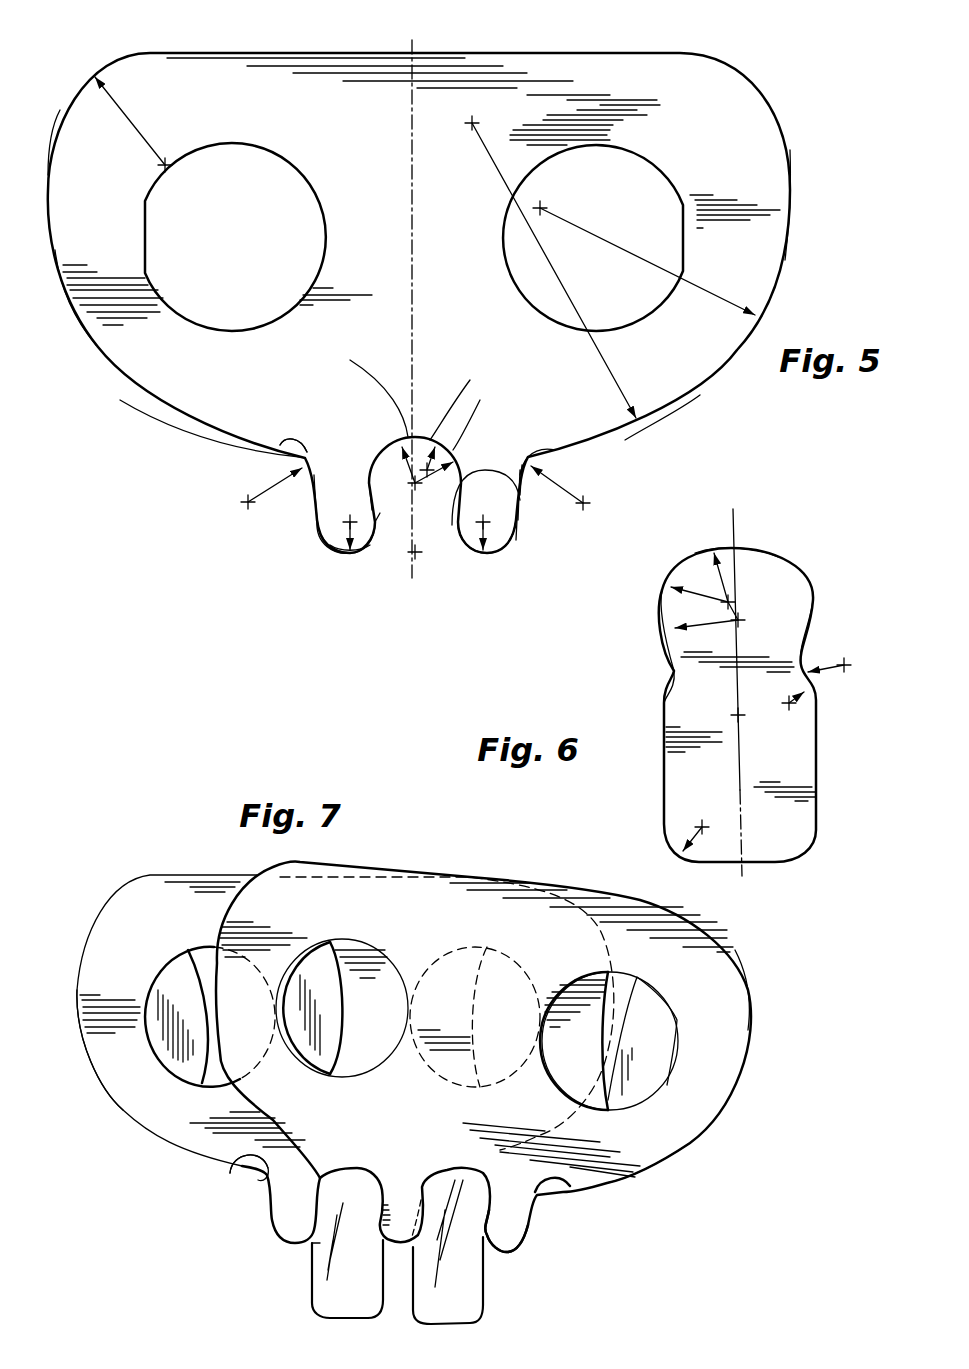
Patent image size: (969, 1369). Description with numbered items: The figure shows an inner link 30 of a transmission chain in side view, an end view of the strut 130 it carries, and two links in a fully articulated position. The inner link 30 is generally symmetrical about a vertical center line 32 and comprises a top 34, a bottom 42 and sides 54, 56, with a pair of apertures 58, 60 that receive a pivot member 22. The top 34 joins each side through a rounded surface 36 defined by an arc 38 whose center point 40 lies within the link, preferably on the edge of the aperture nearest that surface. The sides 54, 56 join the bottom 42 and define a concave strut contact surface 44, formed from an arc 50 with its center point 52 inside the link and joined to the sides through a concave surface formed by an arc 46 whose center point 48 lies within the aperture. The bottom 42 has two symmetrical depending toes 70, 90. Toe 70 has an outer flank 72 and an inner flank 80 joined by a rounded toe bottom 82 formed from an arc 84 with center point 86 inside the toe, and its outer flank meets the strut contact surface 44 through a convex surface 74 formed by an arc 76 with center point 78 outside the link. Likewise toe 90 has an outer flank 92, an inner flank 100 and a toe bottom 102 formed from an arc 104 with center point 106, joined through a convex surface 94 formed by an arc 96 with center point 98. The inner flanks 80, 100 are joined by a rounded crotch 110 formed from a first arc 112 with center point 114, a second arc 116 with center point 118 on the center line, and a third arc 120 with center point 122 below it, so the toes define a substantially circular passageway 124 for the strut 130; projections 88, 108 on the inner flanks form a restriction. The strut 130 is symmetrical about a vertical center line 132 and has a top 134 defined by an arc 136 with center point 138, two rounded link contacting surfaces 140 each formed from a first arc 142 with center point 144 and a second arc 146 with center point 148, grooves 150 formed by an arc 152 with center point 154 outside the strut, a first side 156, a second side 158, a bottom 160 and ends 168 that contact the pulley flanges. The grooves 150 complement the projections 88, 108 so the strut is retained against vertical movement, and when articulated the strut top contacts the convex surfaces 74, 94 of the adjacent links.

In FIG. 7, the pivot member 22 is at (411, 1024).
In FIG. 5, the inner link 30 is at (128, 395).
In FIG. 7, the inner link 30 is at (163, 866).
In FIG. 5, the vertical center line 32 is at (400, 230).
In FIG. 5, the top 34 is at (355, 53).
In FIG. 5, the surface 36 is at (82, 85).
In FIG. 5, the arc 38 is at (113, 97).
In FIG. 5, the center point 40 is at (170, 170).
In FIG. 5, the bottom 42 is at (560, 468).
In FIG. 5, the strut contact surface 44 is at (625, 427).
In FIG. 7, the strut contact surface 44 is at (607, 1185).
In FIG. 5, the arc 46 is at (725, 298).
In FIG. 5, the center point 48 is at (545, 207).
In FIG. 5, the arc 50 is at (615, 368).
In FIG. 5, the center point 52 is at (475, 122).
In FIG. 5, the side 54 is at (45, 215).
In FIG. 7, the side 54 is at (72, 966).
In FIG. 5, the side 56 is at (787, 165).
In FIG. 7, the side 56 is at (750, 1023).
In FIG. 5, the aperture 58 is at (235, 237).
In FIG. 5, the aperture 60 is at (593, 238).
In FIG. 5, the depending toe 70 is at (515, 575).
In FIG. 5, the outer flank 72 is at (520, 515).
In FIG. 7, the convex surface 74 is at (327, 1160).
In FIG. 5, the arc 76 is at (565, 483).
In FIG. 5, the center point 78 is at (590, 503).
In FIG. 5, the inner flank 80 is at (528, 483).
In FIG. 5, the toe bottom 82 is at (492, 557).
In FIG. 5, the arc 84 is at (518, 540).
In FIG. 5, the center point 86 is at (517, 535).
In FIG. 5, the projection 88 is at (470, 555).
In FIG. 5, the depending toe 90 is at (345, 560).
In FIG. 5, the outer flank 92 is at (313, 505).
In FIG. 5, the convex surface 94 is at (297, 446).
In FIG. 7, the convex surface 94 is at (245, 1158).
In FIG. 5, the arc 96 is at (268, 478).
In FIG. 5, the center point 98 is at (246, 503).
In FIG. 5, the inner flank 100 is at (369, 470).
In FIG. 5, the toe bottom 102 is at (318, 573).
In FIG. 5, the arc 104 is at (330, 545).
In FIG. 5, the center point 106 is at (343, 522).
In FIG. 5, the projection 108 is at (383, 515).
In FIG. 5, the rounded crotch 110 is at (350, 360).
In FIG. 5, the first arc 112 is at (470, 380).
In FIG. 5, the center point 114 is at (480, 400).
In FIG. 5, the second arc 116 is at (452, 550).
In FIG. 5, the center point 118 is at (441, 525).
In FIG. 5, the third arc 120 is at (413, 556).
In FIG. 5, the center point 122 is at (418, 560).
In FIG. 5, the passageway 124 is at (210, 428).
In FIG. 6, the strut 130 is at (816, 570).
In FIG. 7, the strut 130 is at (310, 1287).
In FIG. 6, the vertical center line 132 is at (736, 771).
In FIG. 6, the top 134 is at (745, 527).
In FIG. 6, the arc 136 is at (718, 572).
In FIG. 6, the center point 138 is at (731, 716).
In FIG. 6, the rounded link contacting surface 140 is at (678, 566).
In FIG. 7, the rounded link contacting surface 140 is at (310, 1245).
In FIG. 6, the first arc 142 is at (722, 607).
In FIG. 6, the center point 144 is at (732, 621).
In FIG. 6, the second arc 146 is at (702, 630).
In FIG. 6, the center point 148 is at (690, 650).
In FIG. 6, the groove 150 is at (803, 655).
In FIG. 6, the arc 152 is at (822, 670).
In FIG. 6, the center point 154 is at (842, 664).
In FIG. 6, the first side 156 is at (664, 790).
In FIG. 6, the second side 158 is at (816, 760).
In FIG. 6, the bottom 160 is at (770, 862).
In FIG. 6, the ends 168 is at (728, 801).